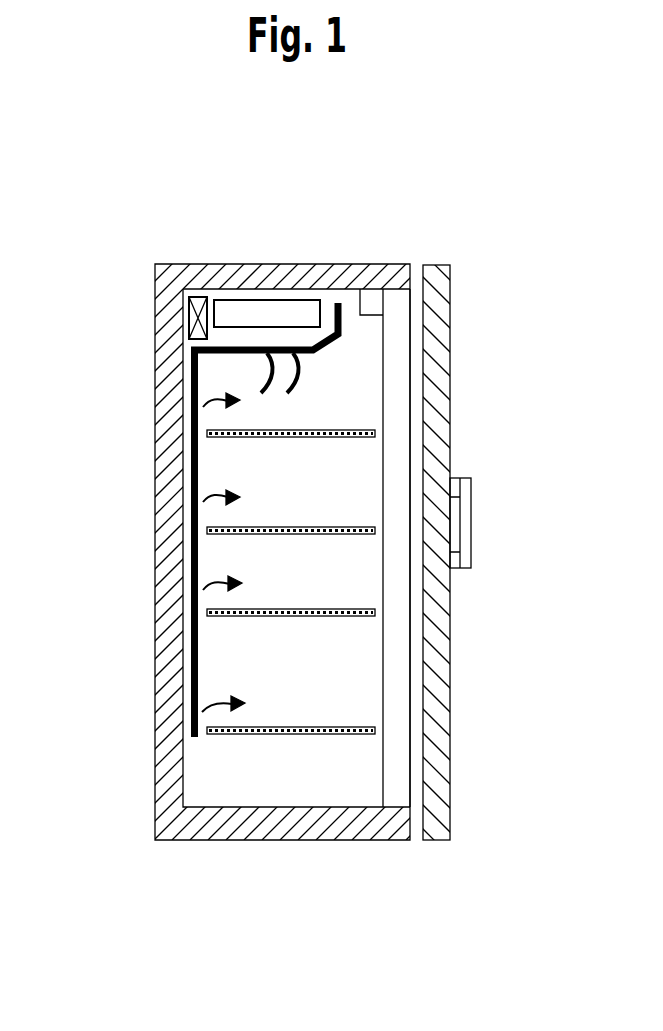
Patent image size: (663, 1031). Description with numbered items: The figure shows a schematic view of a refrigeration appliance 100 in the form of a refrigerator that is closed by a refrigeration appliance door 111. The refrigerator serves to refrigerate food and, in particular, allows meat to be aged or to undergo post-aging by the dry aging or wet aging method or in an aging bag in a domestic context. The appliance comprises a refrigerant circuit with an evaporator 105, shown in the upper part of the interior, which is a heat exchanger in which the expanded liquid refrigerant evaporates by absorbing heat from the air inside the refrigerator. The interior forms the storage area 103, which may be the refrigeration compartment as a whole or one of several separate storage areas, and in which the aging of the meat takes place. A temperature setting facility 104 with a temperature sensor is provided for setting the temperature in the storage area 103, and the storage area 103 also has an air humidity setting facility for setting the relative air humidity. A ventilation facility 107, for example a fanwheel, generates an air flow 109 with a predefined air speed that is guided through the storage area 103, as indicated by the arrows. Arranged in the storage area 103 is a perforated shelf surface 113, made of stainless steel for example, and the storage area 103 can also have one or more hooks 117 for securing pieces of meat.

The refrigeration appliance 100 is at (140, 265).
The storage area 103 is at (352, 392).
The temperature setting facility 104 is at (371, 303).
The evaporator 105 is at (277, 310).
The ventilation facility 107 is at (195, 293).
The air flow 109 is at (193, 384).
The refrigeration appliance door 111 is at (436, 667).
The perforated shelf surface 113 is at (357, 430).
The hooks 117 is at (298, 376).